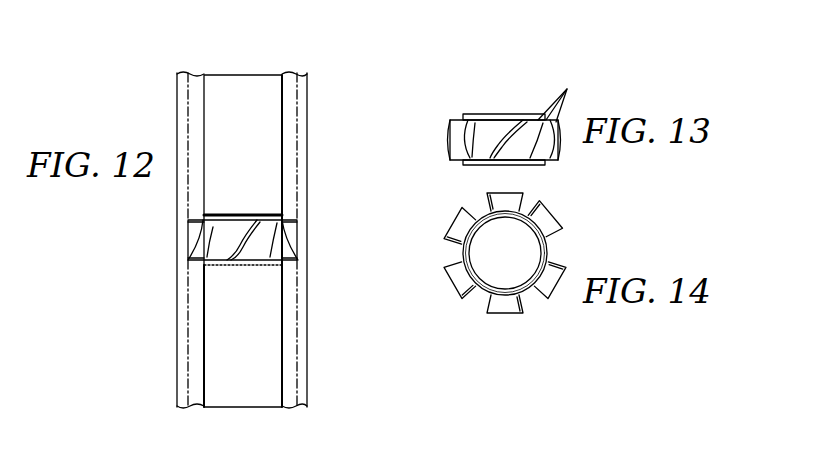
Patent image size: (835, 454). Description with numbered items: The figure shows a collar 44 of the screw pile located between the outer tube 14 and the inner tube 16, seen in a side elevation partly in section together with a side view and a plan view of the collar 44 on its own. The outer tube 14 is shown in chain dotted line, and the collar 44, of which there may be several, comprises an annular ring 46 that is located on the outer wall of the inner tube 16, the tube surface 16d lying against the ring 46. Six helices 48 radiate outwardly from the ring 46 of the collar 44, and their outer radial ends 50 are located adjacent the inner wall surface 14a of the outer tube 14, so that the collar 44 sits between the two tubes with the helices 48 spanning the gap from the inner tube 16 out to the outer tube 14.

In FIG. 12, the outer tube 14 is at (177, 105).
In FIG. 12, the inner wall surface 14a is at (202, 355).
In FIG. 12, the inner tube 16 is at (233, 88).
In FIG. 12, the tube outer surface 16d is at (286, 131).
In FIG. 12, the collar 44 is at (191, 237).
In FIG. 13, the collar 44 is at (516, 112).
In FIG. 14, the collar 44 is at (477, 313).
In FIG. 12, the annular ring 46 is at (274, 214).
In FIG. 13, the annular ring 46 is at (473, 115).
In FIG. 12, the helices 48 is at (242, 240).
In FIG. 13, the helices 48 is at (573, 92).
In FIG. 14, the helices 48 is at (488, 197).
In FIG. 12, the outer radial ends 50 is at (183, 259).
In FIG. 13, the outer radial ends 50 is at (448, 125).
In FIG. 14, the outer radial ends 50 is at (524, 189).